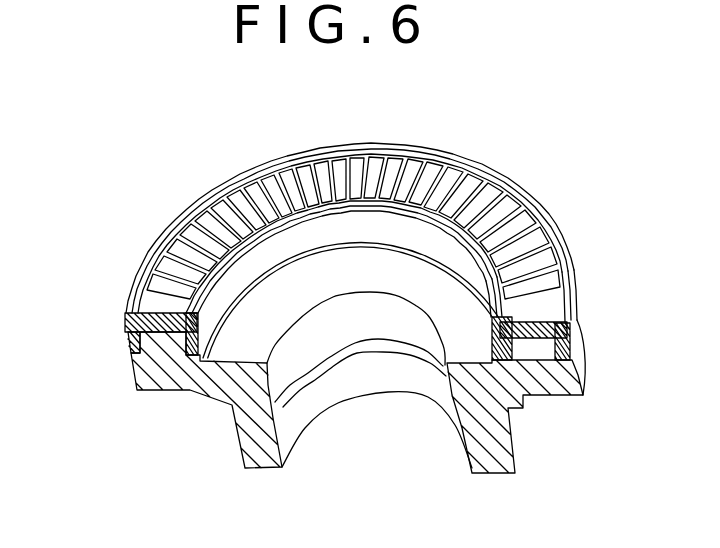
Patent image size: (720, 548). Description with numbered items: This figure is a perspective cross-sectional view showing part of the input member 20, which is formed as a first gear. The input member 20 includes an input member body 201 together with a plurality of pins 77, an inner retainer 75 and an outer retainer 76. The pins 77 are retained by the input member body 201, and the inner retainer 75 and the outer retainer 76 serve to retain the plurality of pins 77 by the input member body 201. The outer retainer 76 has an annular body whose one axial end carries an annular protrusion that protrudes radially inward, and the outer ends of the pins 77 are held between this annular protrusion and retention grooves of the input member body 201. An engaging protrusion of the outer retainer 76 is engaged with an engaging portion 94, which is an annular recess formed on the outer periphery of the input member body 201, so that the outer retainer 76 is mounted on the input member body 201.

The pins 77 is at (368, 138).
The inner retainer 75 is at (218, 279).
The outer retainer 76 is at (124, 320).
The engaging portion 94 is at (128, 343).
The input member body 201 is at (158, 386).
The input member 20 is at (236, 444).